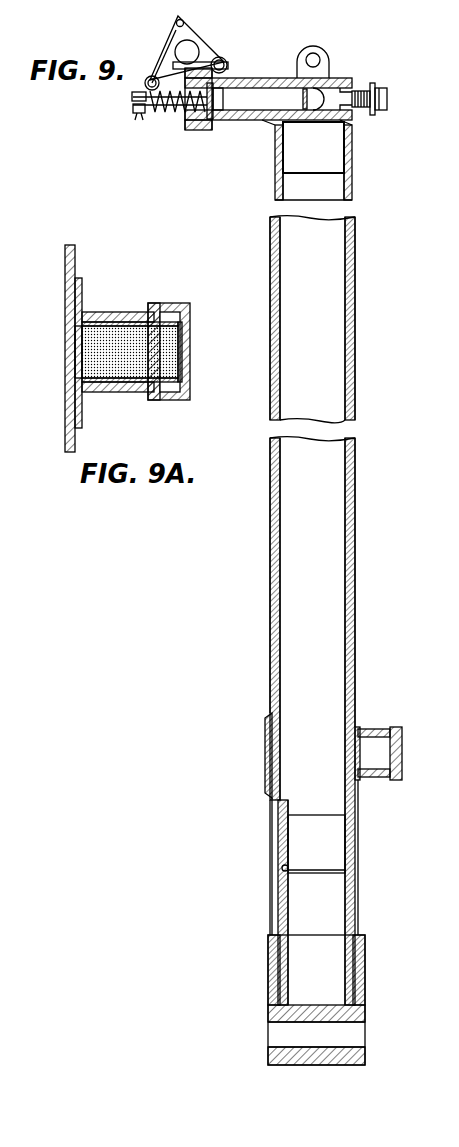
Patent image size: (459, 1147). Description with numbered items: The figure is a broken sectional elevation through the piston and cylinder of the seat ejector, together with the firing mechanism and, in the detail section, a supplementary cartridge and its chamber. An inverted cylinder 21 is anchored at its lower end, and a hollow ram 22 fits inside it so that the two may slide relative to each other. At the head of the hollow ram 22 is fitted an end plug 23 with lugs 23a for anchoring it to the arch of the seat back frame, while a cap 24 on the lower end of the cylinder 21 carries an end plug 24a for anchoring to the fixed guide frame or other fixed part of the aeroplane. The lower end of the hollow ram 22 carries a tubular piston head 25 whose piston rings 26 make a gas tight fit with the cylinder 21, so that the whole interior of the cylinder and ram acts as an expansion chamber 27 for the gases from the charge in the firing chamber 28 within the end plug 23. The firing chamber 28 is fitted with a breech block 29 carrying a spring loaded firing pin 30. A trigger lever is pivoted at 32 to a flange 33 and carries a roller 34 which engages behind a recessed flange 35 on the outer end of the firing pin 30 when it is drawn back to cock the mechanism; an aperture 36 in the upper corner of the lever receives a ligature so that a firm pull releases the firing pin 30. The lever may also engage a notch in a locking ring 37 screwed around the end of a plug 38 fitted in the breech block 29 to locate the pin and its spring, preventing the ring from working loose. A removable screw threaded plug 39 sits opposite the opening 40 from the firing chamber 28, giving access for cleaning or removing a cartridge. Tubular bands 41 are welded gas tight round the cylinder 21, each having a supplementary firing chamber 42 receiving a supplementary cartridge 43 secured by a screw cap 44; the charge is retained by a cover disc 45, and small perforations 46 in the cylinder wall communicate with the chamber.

In FIG. 9, the inverted cylinder 21 is at (271, 410).
In FIG. 9A, the inverted cylinder 21 is at (76, 446).
In FIG. 9, the hollow ram 22 is at (284, 220).
In FIG. 9, the end plug 23 is at (343, 141).
In FIG. 9, the lugs 23a is at (321, 51).
In FIG. 9, the cap 24 is at (268, 960).
In FIG. 9, the end plug 24a is at (318, 1046).
In FIG. 9, the tubular piston head 25 is at (325, 815).
In FIG. 9, the piston rings 26 is at (286, 858).
In FIG. 9, the expansion chamber 27 is at (333, 322).
In FIG. 9, the firing chamber 28 is at (283, 78).
In FIG. 9, the breech block 29 is at (182, 122).
In FIG. 9, the firing pin 30 is at (216, 112).
In FIG. 9, the pivot 32 is at (208, 55).
In FIG. 9, the flange 33 is at (226, 62).
In FIG. 9, the roller 34 is at (143, 88).
In FIG. 9, the recessed flange 35 is at (142, 113).
In FIG. 9, the aperture 36 is at (185, 23).
In FIG. 9, the locking ring 37 is at (164, 56).
In FIG. 9, the plug 38 is at (158, 118).
In FIG. 9, the screw threaded plug 39 is at (378, 112).
In FIG. 9, the opening 40 is at (347, 90).
In FIG. 9, the tubular band 41 is at (266, 755).
In FIG. 9A, the tubular band 41 is at (81, 275).
In FIG. 9, the supplementary firing chamber 42 is at (371, 729).
In FIG. 9A, the supplementary firing chamber 42 is at (129, 312).
In FIG. 9A, the supplementary cartridge 43 is at (182, 366).
In FIG. 9A, the screw cap 44 is at (191, 333).
In FIG. 9A, the cover disc 45 is at (105, 322).
In FIG. 9A, the perforations 46 is at (75, 360).